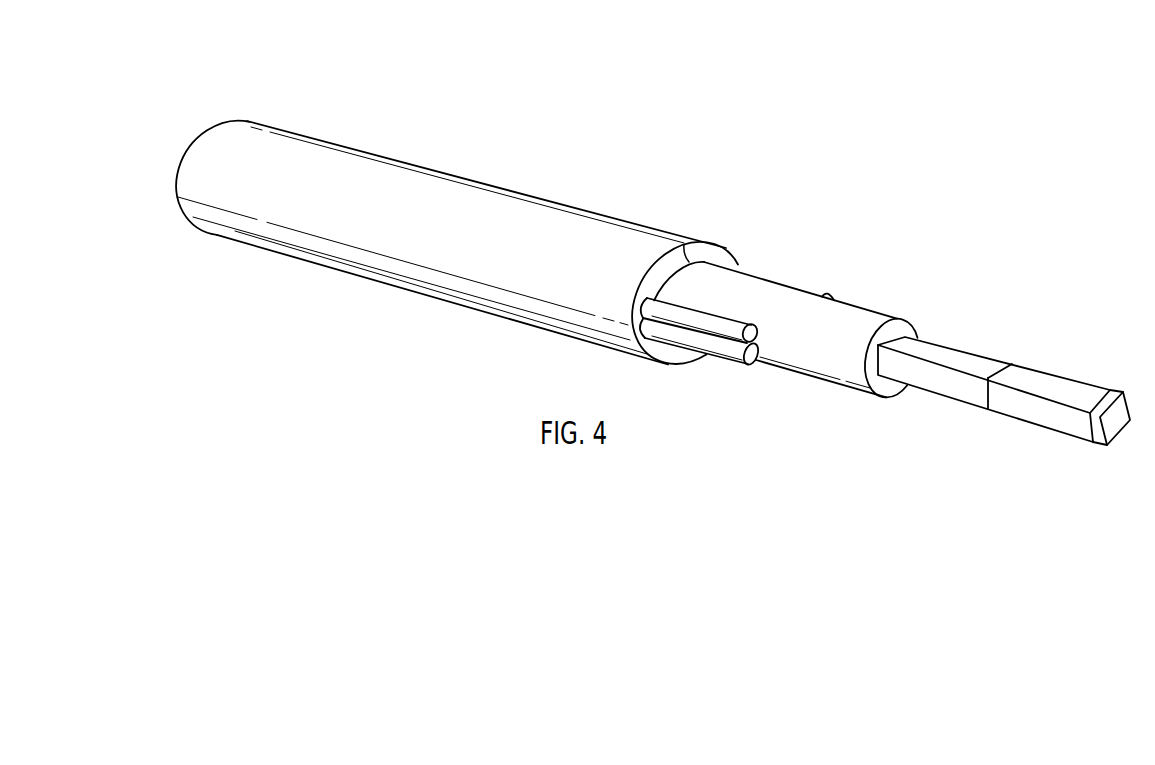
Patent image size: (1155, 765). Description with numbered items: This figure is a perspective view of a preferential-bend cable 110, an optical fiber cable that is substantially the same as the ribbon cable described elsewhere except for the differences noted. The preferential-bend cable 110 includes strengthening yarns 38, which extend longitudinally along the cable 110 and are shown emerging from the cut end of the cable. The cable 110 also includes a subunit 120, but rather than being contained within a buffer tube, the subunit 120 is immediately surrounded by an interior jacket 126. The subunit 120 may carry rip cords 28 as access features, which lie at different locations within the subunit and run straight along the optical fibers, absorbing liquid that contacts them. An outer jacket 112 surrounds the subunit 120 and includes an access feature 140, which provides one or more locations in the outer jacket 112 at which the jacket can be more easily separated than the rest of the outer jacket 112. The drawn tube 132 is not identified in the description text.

The preferential-bend cable 110 is at (294, 74).
The outer jacket 112 is at (290, 144).
The access feature 140 is at (688, 249).
The inner tube 132 is at (861, 308).
The strengthening yarns 38 is at (723, 331).
The subunit 120 is at (921, 391).
The interior jacket 126 is at (953, 396).
The rip cords 28 is at (1003, 372).